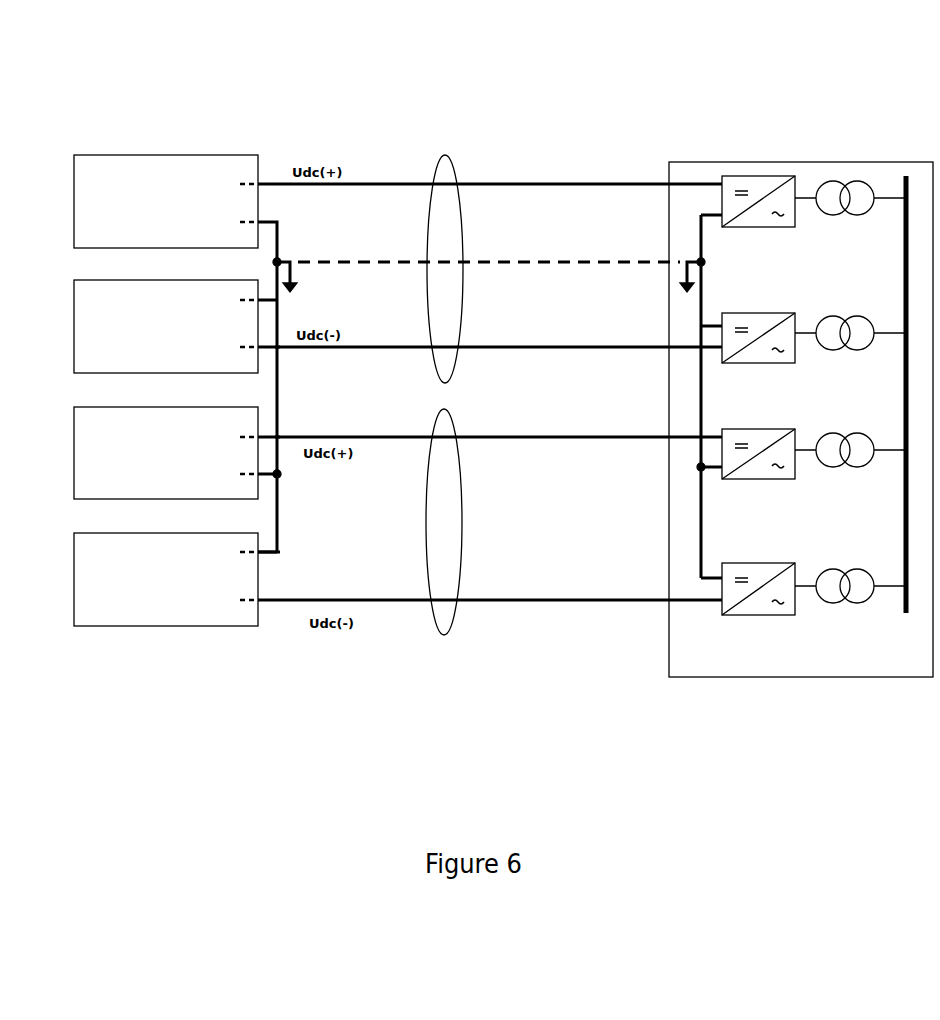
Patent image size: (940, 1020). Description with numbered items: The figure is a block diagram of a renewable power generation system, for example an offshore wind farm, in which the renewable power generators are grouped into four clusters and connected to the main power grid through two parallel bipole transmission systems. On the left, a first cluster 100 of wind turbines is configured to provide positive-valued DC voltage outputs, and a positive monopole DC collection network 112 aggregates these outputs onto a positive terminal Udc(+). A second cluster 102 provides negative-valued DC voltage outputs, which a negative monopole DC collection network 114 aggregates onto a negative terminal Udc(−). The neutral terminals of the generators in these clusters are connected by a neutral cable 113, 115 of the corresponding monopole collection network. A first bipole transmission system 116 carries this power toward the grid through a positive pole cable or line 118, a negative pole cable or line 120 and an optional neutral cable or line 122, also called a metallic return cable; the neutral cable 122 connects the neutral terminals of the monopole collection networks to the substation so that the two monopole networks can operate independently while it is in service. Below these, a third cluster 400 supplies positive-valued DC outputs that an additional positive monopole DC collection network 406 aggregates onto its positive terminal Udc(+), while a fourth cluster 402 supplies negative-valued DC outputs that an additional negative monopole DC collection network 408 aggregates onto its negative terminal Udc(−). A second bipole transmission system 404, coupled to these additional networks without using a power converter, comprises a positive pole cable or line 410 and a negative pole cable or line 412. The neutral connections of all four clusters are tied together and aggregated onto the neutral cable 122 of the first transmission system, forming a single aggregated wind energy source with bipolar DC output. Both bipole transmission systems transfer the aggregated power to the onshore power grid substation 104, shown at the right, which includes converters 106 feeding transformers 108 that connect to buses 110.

The first cluster of renewable power generators 100 is at (166, 201).
The second cluster of renewable power generators 102 is at (166, 326).
The power grid substation 104 is at (801, 419).
The converters 106 is at (753, 562).
The transformers 108 is at (836, 563).
The buses 110 is at (906, 173).
The positive monopole DC collection network 112 is at (244, 172).
The neutral cable 113 is at (243, 212).
The negative monopole DC collection network 114 is at (245, 295).
The neutral cable 115 is at (243, 340).
The bipole transmission system 116 is at (441, 156).
The positive pole cable or line 118 is at (592, 182).
The negative pole cable or line 120 is at (616, 345).
The neutral cable or line 122 is at (580, 258).
The third cluster of renewable power generators 400 is at (166, 453).
The fourth cluster of renewable power generators 402 is at (166, 579).
The second bipole transmission system 404 is at (444, 635).
The additional positive monopole DC collection network 406 is at (247, 430).
The additional negative monopole DC collection network 408 is at (246, 548).
The positive pole cable or line 410 is at (526, 434).
The negative pole cable or line 412 is at (548, 598).